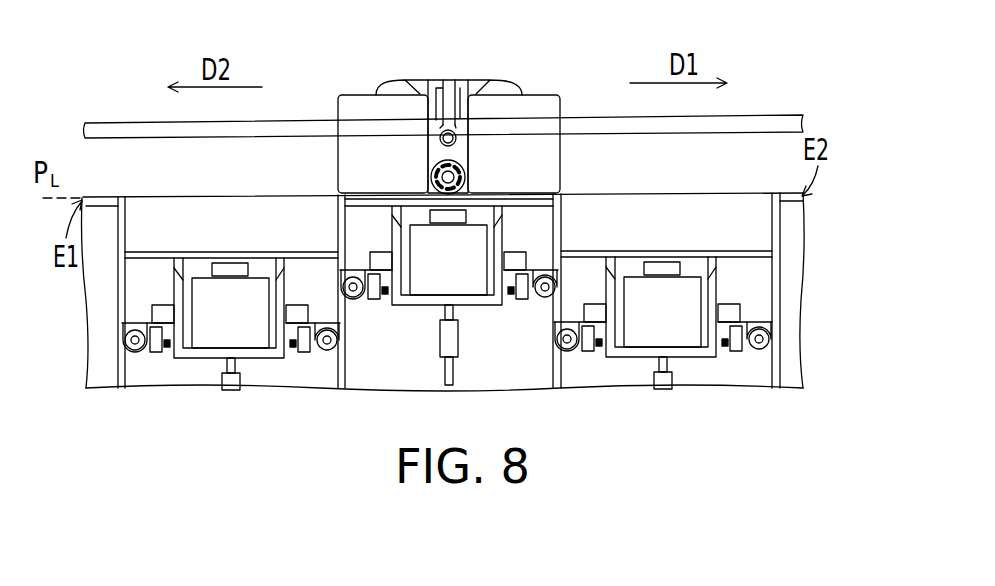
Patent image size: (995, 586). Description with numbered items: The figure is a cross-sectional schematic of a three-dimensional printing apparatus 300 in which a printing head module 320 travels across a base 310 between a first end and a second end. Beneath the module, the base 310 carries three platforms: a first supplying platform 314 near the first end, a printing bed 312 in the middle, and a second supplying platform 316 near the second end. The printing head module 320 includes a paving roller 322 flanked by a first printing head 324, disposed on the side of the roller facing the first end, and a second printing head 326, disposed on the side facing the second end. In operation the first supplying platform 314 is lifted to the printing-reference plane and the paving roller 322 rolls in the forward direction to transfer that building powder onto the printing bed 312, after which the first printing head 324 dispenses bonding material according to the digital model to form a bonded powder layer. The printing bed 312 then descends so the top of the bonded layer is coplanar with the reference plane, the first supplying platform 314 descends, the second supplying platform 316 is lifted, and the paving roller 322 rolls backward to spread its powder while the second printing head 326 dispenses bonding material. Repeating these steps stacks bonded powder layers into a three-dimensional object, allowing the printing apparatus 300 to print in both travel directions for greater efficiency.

The 3-D printing apparatus 300 is at (819, 459).
The base 310 is at (794, 246).
The printing bed 312 is at (524, 193).
The first supplying platform 314 is at (230, 255).
The second supplying platform 316 is at (665, 248).
The printing head module 320 is at (317, 38).
The paving roller 322 is at (441, 105).
The first printing head 324 is at (366, 110).
The second printing head 326 is at (511, 108).